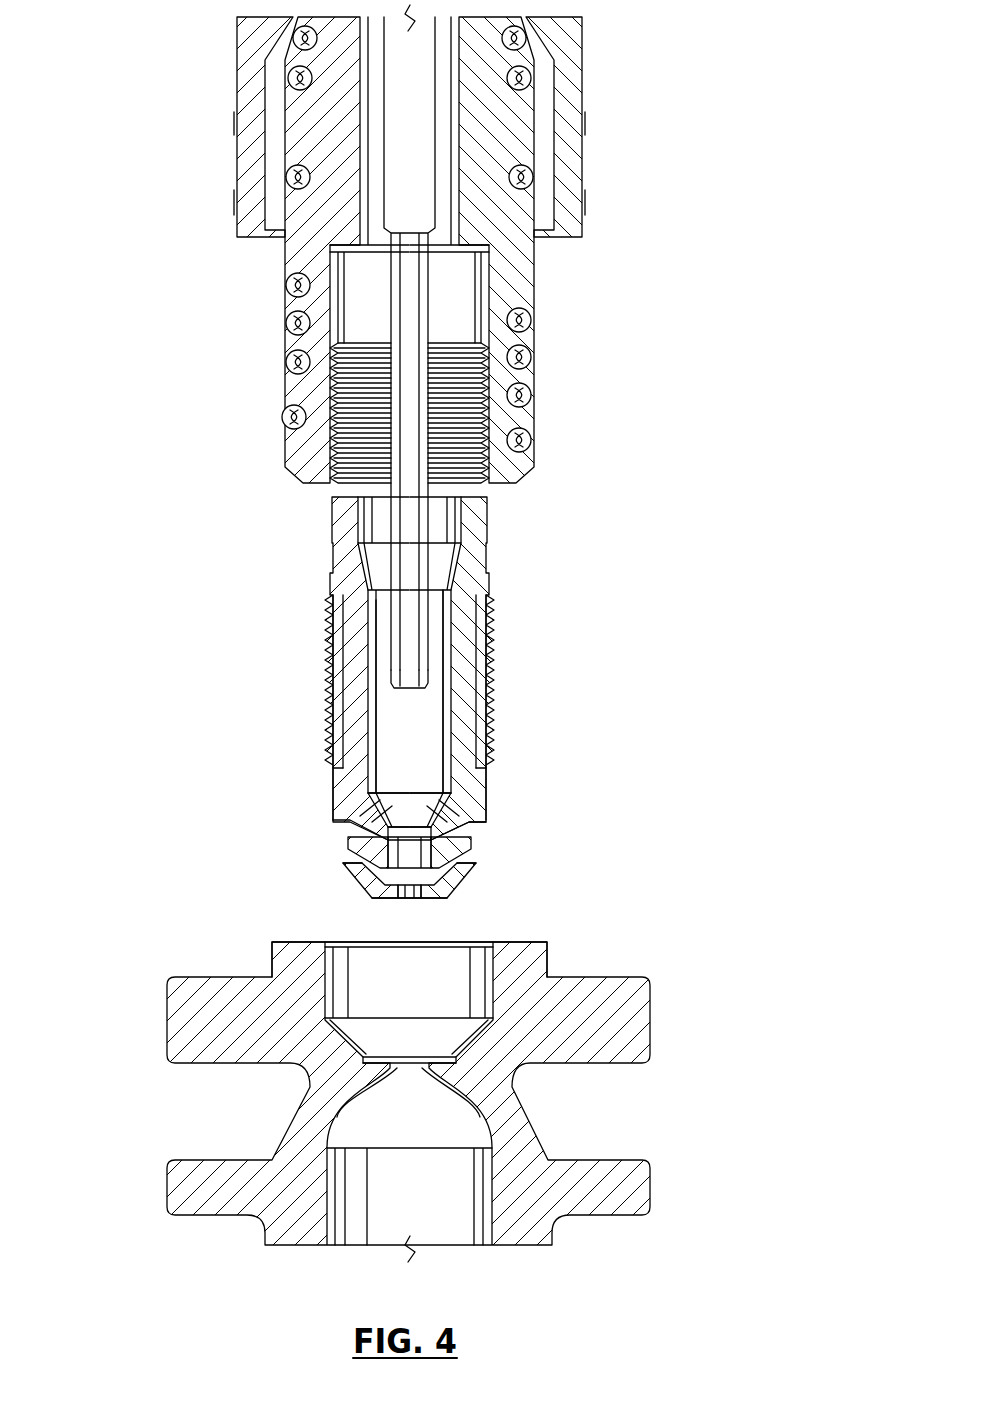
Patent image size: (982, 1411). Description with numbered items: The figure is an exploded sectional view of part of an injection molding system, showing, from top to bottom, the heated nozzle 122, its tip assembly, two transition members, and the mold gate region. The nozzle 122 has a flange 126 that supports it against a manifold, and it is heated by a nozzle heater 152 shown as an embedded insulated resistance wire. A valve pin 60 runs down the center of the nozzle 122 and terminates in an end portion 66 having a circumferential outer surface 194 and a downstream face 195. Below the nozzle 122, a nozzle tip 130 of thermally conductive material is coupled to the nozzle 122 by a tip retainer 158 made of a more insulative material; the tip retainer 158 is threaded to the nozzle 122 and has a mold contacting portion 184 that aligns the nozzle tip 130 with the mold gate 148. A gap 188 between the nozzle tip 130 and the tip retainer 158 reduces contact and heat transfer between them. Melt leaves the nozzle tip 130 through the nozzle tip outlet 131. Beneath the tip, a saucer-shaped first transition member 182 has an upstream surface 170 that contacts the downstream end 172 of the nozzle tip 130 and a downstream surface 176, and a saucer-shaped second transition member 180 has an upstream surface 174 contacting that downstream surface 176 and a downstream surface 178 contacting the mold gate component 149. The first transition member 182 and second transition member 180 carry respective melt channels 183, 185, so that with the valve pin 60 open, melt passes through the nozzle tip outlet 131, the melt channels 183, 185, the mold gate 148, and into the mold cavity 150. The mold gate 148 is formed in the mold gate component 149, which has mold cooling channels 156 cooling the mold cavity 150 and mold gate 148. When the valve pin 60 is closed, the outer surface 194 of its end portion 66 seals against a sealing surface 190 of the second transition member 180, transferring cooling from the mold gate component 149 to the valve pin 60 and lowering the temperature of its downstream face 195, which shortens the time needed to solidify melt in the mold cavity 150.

The flange 126 is at (562, 108).
The nozzle 122 is at (540, 260).
The nozzle heater 152 is at (297, 285).
The valve pin 60 is at (410, 521).
The end portion 66 is at (400, 687).
The nozzle tip 130 is at (483, 562).
The tip retainer 158 is at (490, 637).
The circumferential outer surface 194 is at (450, 678).
The downstream face 195 is at (345, 693).
The gap 188 is at (490, 697).
The mold contacting portion 184 is at (493, 762).
The nozzle tip outlet 131 is at (483, 780).
The first transition member melt channel 183 is at (465, 852).
The downstream end 172 is at (357, 833).
The first transition member 182 is at (463, 855).
The upstream surface 170 is at (348, 841).
The downstream surface 176 is at (352, 849).
The upstream surface 174 is at (357, 862).
The second transition member 180 is at (450, 892).
The downstream surface 178 is at (368, 880).
The second transition member melt channel 185 is at (415, 905).
The sealing surface 190 is at (398, 900).
The mold gate component 149 is at (520, 963).
The mold cooling channels 156 is at (245, 1107).
The mold gate 148 is at (408, 1065).
The mold cavity 150 is at (467, 1168).